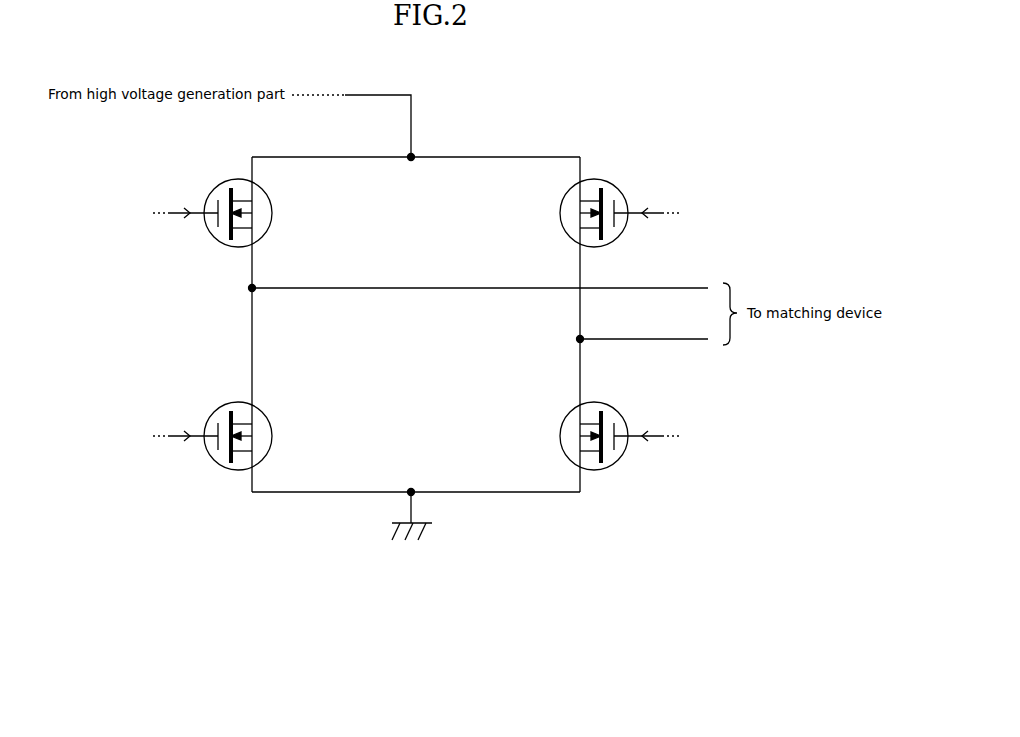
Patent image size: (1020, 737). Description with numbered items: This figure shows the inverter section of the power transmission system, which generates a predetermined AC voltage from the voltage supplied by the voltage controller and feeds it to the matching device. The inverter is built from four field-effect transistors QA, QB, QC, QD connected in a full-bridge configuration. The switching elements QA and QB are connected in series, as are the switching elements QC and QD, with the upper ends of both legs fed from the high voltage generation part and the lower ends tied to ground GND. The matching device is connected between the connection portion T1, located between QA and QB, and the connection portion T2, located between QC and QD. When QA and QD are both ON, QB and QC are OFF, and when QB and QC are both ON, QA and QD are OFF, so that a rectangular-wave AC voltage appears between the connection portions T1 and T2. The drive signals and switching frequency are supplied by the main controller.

The switching element QA is at (212, 209).
The switching element QB is at (212, 431).
The switching element QC is at (620, 209).
The switching element QD is at (620, 431).
The connection portion T1 is at (467, 291).
The connection portion T2 is at (626, 341).
The ground connection GND is at (412, 529).